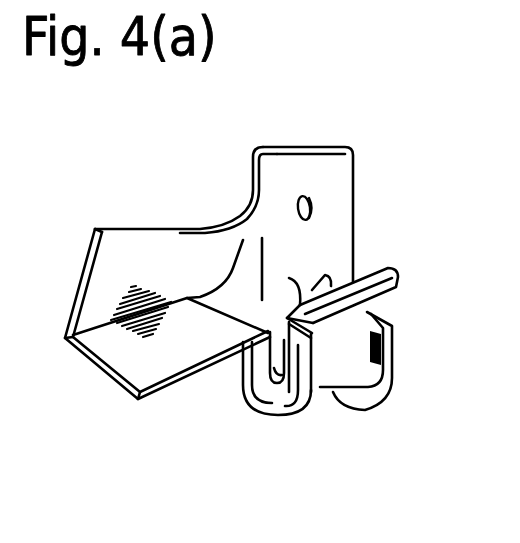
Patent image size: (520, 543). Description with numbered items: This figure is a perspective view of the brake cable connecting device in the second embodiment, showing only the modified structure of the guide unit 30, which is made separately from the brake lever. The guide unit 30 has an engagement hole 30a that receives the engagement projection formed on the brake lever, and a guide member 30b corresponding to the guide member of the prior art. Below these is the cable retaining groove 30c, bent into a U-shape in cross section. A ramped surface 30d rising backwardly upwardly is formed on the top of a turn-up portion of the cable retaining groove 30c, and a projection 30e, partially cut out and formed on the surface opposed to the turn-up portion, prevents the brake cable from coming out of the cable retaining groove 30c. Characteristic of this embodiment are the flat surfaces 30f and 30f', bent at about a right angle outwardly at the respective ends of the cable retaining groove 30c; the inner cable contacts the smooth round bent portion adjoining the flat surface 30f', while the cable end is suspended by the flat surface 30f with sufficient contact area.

The guide unit 30 is at (270, 160).
The engagement hole 30a is at (313, 207).
The guide member 30b is at (143, 372).
The cable retaining groove 30c is at (265, 393).
The ramped surface 30d is at (392, 272).
The projection 30e is at (312, 287).
The flat surface 30f is at (387, 396).
The flat surface 30f' is at (316, 427).